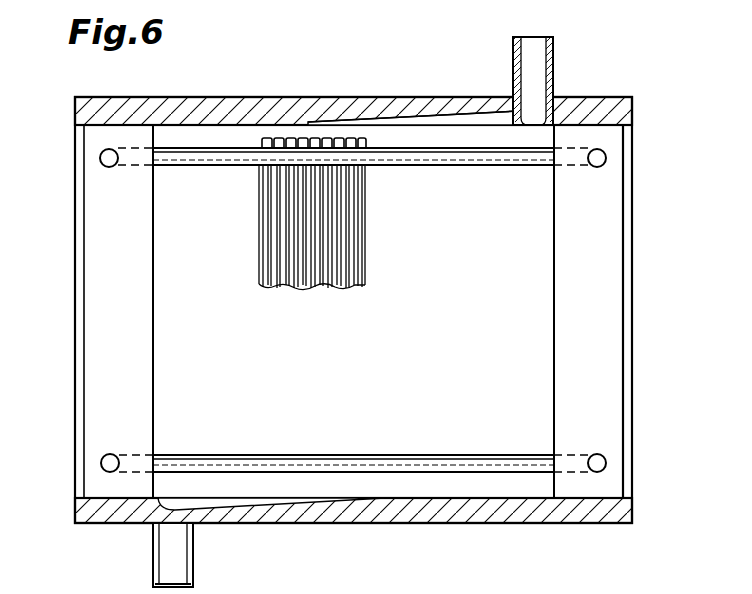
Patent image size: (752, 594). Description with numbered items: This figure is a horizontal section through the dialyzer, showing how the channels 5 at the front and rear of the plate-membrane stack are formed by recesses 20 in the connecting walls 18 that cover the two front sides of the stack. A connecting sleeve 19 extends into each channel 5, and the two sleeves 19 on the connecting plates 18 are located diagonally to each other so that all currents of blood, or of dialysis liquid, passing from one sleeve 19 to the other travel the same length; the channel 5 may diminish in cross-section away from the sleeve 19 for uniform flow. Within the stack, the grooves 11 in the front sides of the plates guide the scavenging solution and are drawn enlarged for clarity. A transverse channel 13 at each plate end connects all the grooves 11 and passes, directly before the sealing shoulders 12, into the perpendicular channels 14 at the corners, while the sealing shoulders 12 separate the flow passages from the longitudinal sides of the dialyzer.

The channel 5 is at (493, 117).
The grooves 11 is at (302, 146).
The sealing shoulder 12 is at (98, 268).
The transverse channel 13 is at (335, 160).
The perpendicular channels 14 is at (103, 153).
The connecting plates 18 is at (198, 115).
The connecting sleeves 19 is at (535, 78).
The recess 20 is at (428, 116).